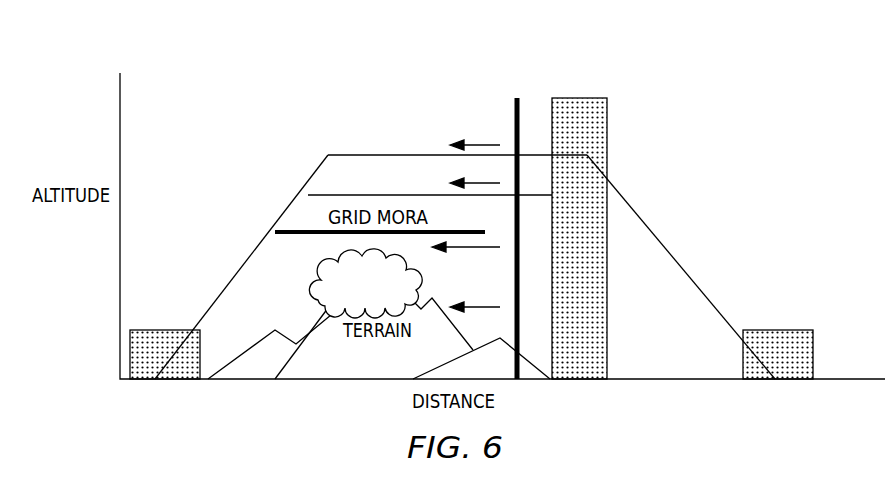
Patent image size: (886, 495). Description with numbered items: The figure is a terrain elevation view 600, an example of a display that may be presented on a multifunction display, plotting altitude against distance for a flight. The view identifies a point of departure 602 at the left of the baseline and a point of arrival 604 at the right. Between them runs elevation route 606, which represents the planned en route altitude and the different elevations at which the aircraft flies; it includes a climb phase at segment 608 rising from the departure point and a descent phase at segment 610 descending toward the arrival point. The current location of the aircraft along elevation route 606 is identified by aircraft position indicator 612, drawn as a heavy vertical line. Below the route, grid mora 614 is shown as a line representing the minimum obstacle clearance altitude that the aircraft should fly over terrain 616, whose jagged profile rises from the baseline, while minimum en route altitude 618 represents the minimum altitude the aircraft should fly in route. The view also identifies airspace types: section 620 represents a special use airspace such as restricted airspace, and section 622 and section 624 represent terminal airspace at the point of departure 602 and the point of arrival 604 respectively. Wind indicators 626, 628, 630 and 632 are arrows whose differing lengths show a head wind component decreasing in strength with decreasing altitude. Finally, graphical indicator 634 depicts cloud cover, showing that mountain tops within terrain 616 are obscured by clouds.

The terrain elevation view 600 is at (274, 113).
The point of departure 602 is at (168, 364).
The point of arrival 604 is at (758, 366).
The elevation route 606 is at (367, 155).
The segment 608 is at (237, 272).
The segment 610 is at (687, 273).
The aircraft position indicator 612 is at (519, 110).
The grid mora 614 is at (300, 234).
The terrain 616 is at (336, 370).
The minimum en route altitude 618 is at (310, 182).
The section 620 is at (607, 300).
The section 622 is at (160, 328).
The section 624 is at (770, 330).
The wind indicator 626 is at (476, 141).
The wind indicator 628 is at (452, 183).
The wind indicator 630 is at (462, 250).
The wind indicator 632 is at (480, 303).
The graphical indicator 634 is at (388, 293).